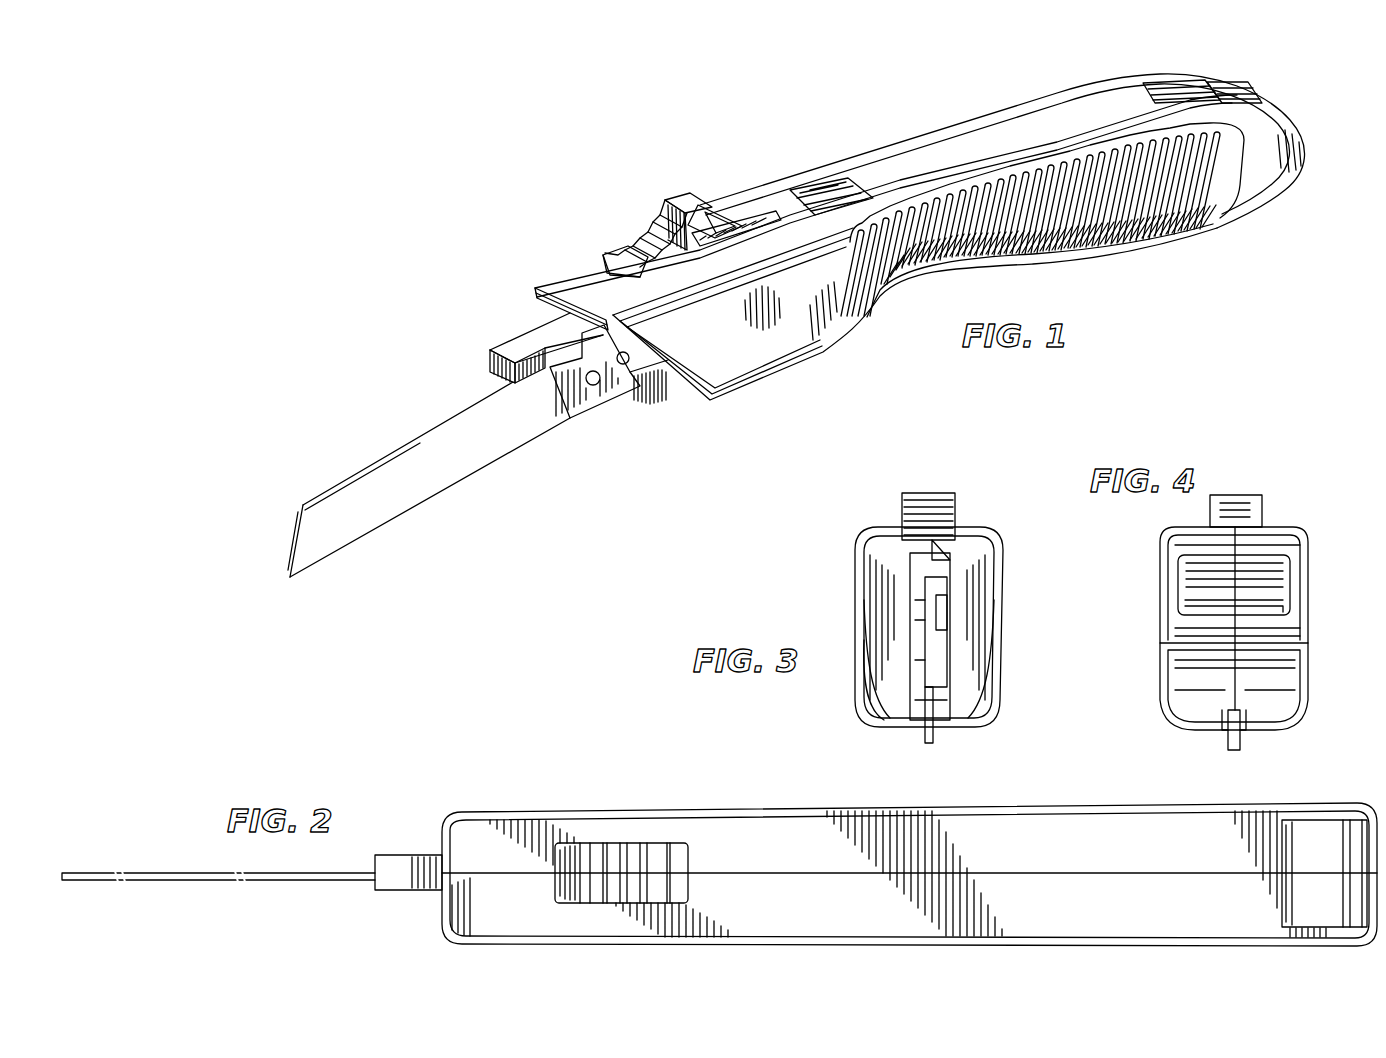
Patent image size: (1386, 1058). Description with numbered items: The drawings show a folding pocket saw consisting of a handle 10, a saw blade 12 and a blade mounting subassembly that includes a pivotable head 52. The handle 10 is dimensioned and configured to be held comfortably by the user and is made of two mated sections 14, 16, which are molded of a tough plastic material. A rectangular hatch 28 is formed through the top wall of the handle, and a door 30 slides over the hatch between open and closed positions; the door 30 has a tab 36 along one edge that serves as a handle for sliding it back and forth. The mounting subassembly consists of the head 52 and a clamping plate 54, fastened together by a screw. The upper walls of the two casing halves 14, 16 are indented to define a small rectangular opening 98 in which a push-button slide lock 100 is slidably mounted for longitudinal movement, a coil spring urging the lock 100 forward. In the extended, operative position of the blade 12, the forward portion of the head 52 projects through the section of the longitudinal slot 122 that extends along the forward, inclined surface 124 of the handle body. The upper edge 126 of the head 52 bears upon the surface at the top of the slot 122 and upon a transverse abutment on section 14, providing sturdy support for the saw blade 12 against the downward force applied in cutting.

In FIG. 1, the handle 10 is at (1228, 224).
In FIG. 1, the saw blade 12 is at (354, 472).
In FIG. 2, the saw blade 12 is at (173, 862).
In FIG. 3, the saw blade 12 is at (915, 740).
In FIG. 4, the saw blade 12 is at (1234, 730).
In FIG. 1, the mated handle section 14 is at (818, 168).
In FIG. 2, the mated handle section 14 is at (1040, 833).
In FIG. 3, the mated handle section 14 is at (880, 560).
In FIG. 4, the mated handle section 14 is at (1293, 683).
In FIG. 1, the mated handle section 16 is at (790, 340).
In FIG. 2, the mated handle section 16 is at (908, 932).
In FIG. 3, the mated handle section 16 is at (977, 573).
In FIG. 4, the mated handle section 16 is at (1173, 687).
In FIG. 1, the rectangular hatch 28 is at (1177, 82).
In FIG. 2, the rectangular hatch 28 is at (1292, 893).
In FIG. 1, the door 30 is at (1223, 84).
In FIG. 2, the door 30 is at (1323, 837).
In FIG. 4, the door 30 is at (1273, 572).
In FIG. 4, the tab 36 is at (1273, 613).
In FIG. 1, the pivotable head 52 is at (487, 355).
In FIG. 2, the pivotable head 52 is at (420, 897).
In FIG. 3, the pivotable head 52 is at (940, 545).
In FIG. 1, the clamping plate 54 is at (617, 378).
In FIG. 3, the clamping plate 54 is at (940, 657).
In FIG. 2, the rectangular opening 98 is at (650, 850).
In FIG. 1, the push-button slide lock 100 is at (675, 182).
In FIG. 2, the push-button slide lock 100 is at (584, 834).
In FIG. 3, the push-button slide lock 100 is at (892, 501).
In FIG. 4, the push-button slide lock 100 is at (1272, 503).
In FIG. 3, the longitudinal slot 122 is at (943, 613).
In FIG. 1, the forward inclined surface 124 is at (677, 400).
In FIG. 3, the forward inclined surface 124 is at (888, 667).
In FIG. 1, the upper edge of the head 126 is at (530, 332).